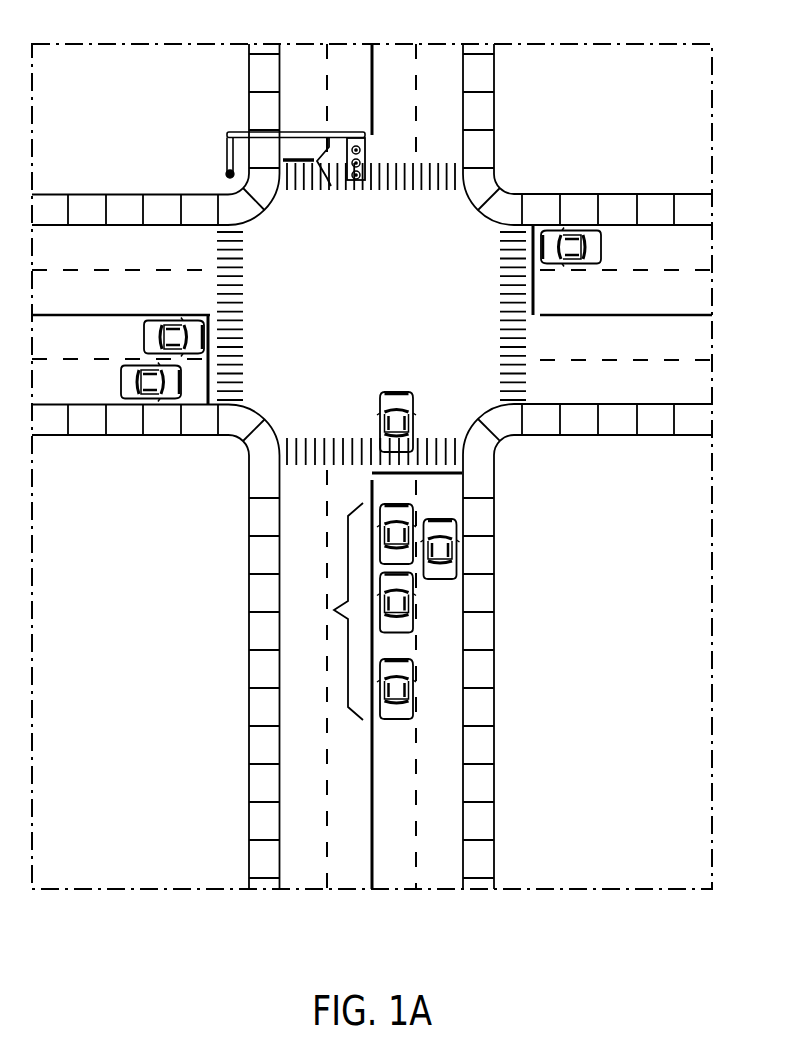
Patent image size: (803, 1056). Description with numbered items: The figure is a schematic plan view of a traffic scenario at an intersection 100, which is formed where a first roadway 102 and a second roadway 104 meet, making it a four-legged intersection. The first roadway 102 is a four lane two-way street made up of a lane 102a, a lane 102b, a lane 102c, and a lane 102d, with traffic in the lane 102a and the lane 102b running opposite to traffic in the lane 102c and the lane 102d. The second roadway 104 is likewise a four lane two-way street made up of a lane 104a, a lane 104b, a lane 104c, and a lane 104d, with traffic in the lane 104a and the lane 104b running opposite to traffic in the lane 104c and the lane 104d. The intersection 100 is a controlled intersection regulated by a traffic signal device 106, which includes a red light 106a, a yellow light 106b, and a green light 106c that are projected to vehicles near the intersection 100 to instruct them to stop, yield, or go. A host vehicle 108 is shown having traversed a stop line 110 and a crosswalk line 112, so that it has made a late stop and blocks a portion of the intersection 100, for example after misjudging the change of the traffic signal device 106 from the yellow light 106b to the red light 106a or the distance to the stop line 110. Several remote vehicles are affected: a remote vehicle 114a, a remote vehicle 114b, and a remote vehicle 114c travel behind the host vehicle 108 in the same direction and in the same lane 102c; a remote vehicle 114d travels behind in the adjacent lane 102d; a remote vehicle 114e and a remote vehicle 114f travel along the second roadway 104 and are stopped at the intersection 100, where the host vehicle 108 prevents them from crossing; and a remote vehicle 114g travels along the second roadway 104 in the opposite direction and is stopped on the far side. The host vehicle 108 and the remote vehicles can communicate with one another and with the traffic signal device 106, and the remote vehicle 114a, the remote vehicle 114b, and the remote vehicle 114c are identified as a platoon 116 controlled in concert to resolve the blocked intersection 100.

The intersection 100 is at (592, 141).
The first roadway 102 is at (242, 734).
The lane 102a is at (298, 836).
The lane 102b is at (343, 875).
The lane 102c is at (395, 877).
The lane 102d is at (442, 833).
The second roadway 104 is at (162, 178).
The lane 104a is at (97, 259).
The lane 104b is at (97, 304).
The lane 104c is at (97, 349).
The lane 104d is at (97, 394).
The traffic signal device 106 is at (314, 163).
The red light 106a is at (360, 149).
The yellow light 106b is at (362, 163).
The green light 106c is at (367, 176).
The host vehicle 108 is at (395, 392).
The stop line 110 is at (462, 475).
The crosswalk line 112 is at (447, 447).
The remote vehicle 114a is at (412, 516).
The remote vehicle 114b is at (412, 605).
The remote vehicle 114c is at (412, 686).
The remote vehicle 114d is at (457, 552).
The remote vehicle 114e is at (195, 322).
The remote vehicle 114f is at (155, 396).
The remote vehicle 114g is at (570, 233).
The platoon 116 is at (331, 611).